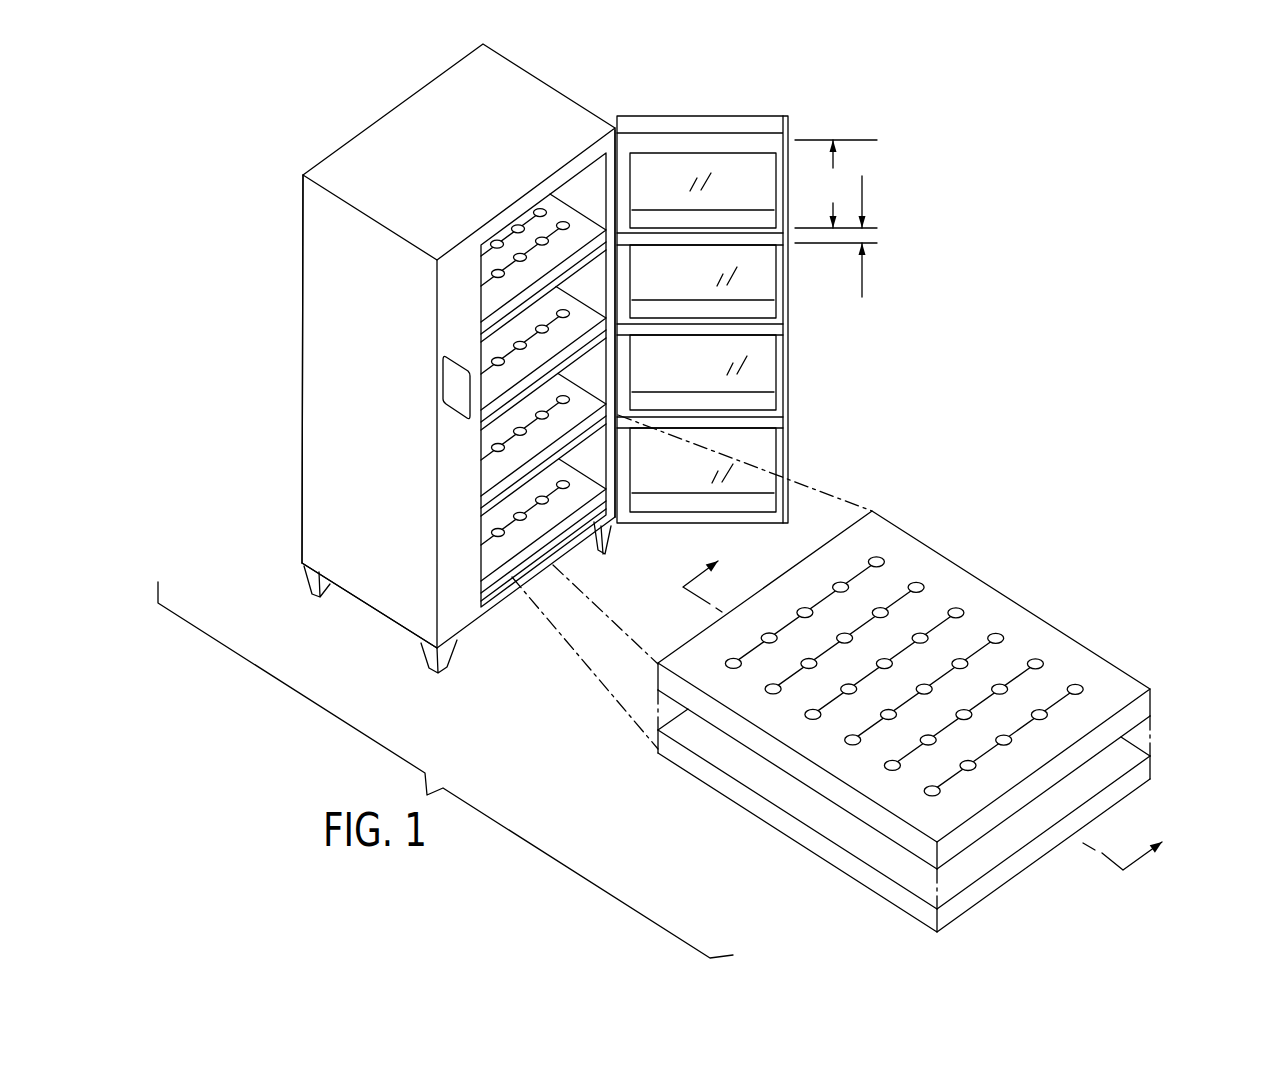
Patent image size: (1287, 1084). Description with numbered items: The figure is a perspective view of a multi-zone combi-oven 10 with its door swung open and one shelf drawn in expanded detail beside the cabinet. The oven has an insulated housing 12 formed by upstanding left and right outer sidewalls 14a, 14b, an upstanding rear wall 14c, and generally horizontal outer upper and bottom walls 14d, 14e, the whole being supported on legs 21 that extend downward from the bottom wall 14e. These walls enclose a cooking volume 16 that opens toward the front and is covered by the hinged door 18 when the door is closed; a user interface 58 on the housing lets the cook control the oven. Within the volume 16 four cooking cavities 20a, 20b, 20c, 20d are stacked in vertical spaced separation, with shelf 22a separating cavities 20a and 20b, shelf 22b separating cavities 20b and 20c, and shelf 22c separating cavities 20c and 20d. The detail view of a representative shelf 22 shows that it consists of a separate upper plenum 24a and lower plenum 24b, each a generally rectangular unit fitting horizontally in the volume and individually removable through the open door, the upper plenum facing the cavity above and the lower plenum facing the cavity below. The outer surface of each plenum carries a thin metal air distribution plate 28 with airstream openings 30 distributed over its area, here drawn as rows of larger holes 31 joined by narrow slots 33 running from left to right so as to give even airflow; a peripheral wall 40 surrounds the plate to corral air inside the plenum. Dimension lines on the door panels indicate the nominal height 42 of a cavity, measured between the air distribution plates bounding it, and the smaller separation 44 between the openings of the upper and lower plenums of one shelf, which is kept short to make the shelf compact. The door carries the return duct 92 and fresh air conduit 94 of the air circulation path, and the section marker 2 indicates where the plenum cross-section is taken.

The combi-oven 10 is at (697, 80).
The housing 12 is at (347, 140).
The left outer sidewall 14a is at (318, 288).
The right outer sidewall 14b is at (572, 84).
The rear wall 14c is at (290, 229).
The upper wall 14d is at (418, 116).
The bottom wall 14e is at (372, 622).
The cooking volume 16 is at (586, 573).
The hinged door 18 is at (789, 118).
The cooking cavity 20a is at (489, 297).
The cooking cavity 20b is at (497, 394).
The cooking cavity 20c is at (497, 478).
The cooking cavity 20d is at (496, 553).
The legs 21 is at (306, 578).
The shelf 22 is at (1110, 633).
The shelf 22a is at (598, 258).
The shelf 22b is at (599, 347).
The shelf 22c is at (598, 437).
The upper plenum 24a is at (1012, 600).
The lower plenum 24b is at (1150, 767).
The air distribution plate 28 is at (948, 580).
The airstream openings 30 is at (771, 696).
The holes 31 is at (842, 582).
The slots 33 is at (806, 606).
The peripheral wall 40 is at (795, 765).
The nominal height 42 is at (836, 184).
The separation 44 is at (863, 190).
The user interface 58 is at (445, 383).
The return duct 92 is at (726, 172).
The fresh air conduit 94 is at (742, 244).
The section line 2- 2 is at (922, 715).